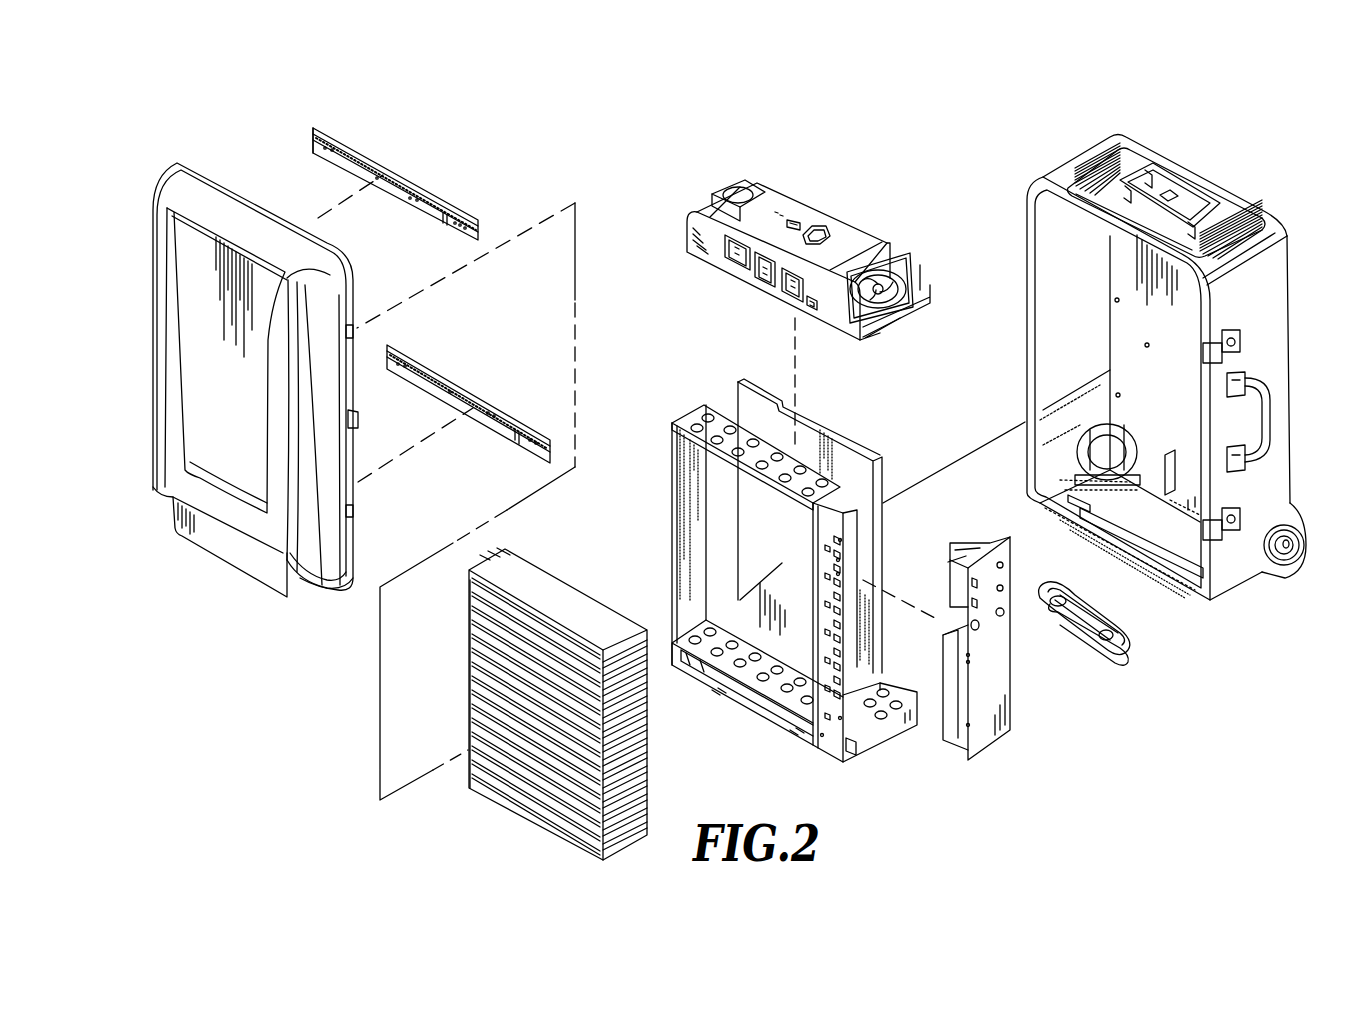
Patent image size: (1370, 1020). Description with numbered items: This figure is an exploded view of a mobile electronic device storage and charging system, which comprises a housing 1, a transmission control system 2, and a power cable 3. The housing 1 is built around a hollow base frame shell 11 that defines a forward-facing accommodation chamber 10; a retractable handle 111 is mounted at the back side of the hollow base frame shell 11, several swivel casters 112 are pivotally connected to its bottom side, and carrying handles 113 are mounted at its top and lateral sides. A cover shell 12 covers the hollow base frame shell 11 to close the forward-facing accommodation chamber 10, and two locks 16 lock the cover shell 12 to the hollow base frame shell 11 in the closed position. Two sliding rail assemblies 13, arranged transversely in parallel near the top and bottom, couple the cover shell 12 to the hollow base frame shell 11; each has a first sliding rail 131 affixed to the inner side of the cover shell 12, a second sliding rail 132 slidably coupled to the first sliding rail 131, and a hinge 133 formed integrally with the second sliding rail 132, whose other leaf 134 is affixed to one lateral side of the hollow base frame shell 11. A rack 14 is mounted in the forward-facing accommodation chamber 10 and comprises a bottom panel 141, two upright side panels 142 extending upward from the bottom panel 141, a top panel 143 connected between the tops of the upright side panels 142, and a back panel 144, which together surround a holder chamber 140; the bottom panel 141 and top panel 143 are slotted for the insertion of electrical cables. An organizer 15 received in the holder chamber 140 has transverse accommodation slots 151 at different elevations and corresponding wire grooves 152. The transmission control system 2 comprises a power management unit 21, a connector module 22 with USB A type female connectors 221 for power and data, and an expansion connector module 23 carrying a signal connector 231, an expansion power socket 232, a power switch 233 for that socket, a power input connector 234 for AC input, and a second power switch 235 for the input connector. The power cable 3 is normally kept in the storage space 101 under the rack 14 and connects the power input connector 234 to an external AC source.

The housing 1 is at (1252, 180).
The forward-facing accommodation chamber 10 is at (1068, 285).
The storage space 101 is at (1167, 540).
The hollow base frame shell 11 is at (1280, 346).
The retractable handle 111 is at (1198, 172).
The swivel casters 112 is at (1282, 563).
The carrying handles 113 is at (1168, 172).
The cover shell 12 is at (207, 197).
The sliding rail assemblies 13 is at (419, 172).
The first sliding rail 131 is at (350, 163).
The second sliding rail 132 is at (330, 140).
The hinge 133 is at (313, 130).
The other leaf 134 is at (320, 128).
The rack 14 is at (833, 410).
The holder chamber 140 is at (758, 513).
The bottom panel 141 is at (783, 713).
The upright side panels 142 is at (682, 478).
The top panel 143 is at (700, 428).
The back panel 144 is at (832, 450).
The organizer 15 is at (552, 585).
The transverse accommodation slots 151 is at (528, 783).
The wire grooves 152 is at (630, 745).
The locks 16 is at (1248, 337).
The transmission control system 2 is at (1028, 712).
The power management unit 21 is at (1000, 664).
The connector module 22 is at (856, 710).
The USB A type female connectors 221 is at (840, 705).
The expansion connector module 23 is at (872, 156).
The signal connector 231 is at (787, 290).
The expansion power socket 232 is at (757, 255).
The power switch 233 is at (810, 312).
The power input connector 234 is at (826, 232).
The second power switch 235 is at (800, 220).
The power cable 3 is at (1046, 586).